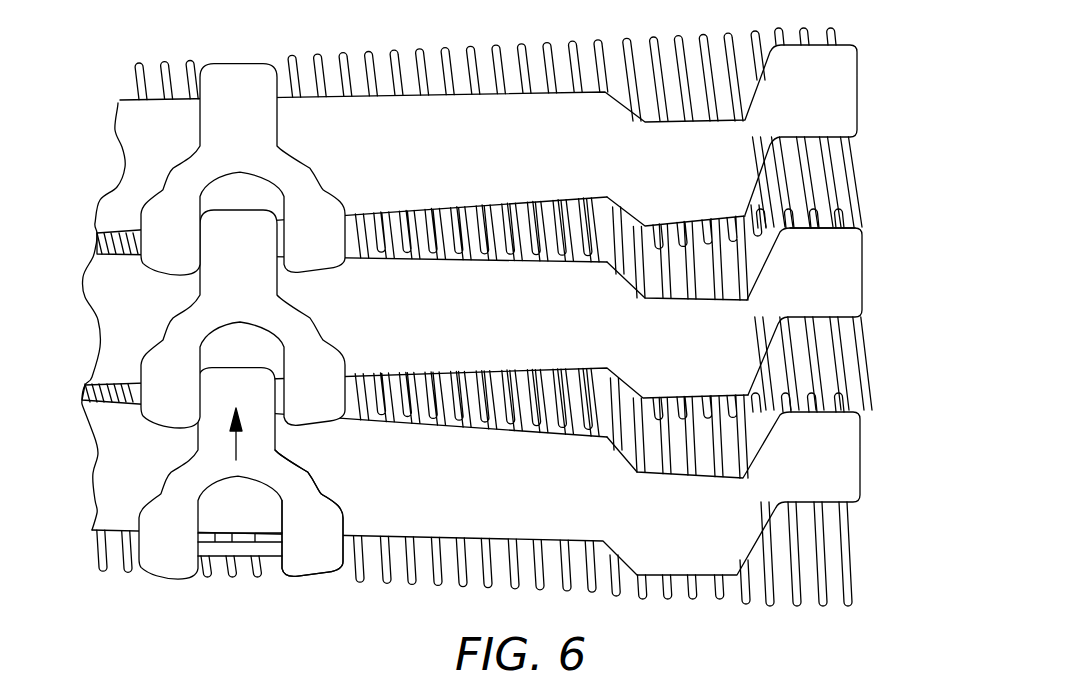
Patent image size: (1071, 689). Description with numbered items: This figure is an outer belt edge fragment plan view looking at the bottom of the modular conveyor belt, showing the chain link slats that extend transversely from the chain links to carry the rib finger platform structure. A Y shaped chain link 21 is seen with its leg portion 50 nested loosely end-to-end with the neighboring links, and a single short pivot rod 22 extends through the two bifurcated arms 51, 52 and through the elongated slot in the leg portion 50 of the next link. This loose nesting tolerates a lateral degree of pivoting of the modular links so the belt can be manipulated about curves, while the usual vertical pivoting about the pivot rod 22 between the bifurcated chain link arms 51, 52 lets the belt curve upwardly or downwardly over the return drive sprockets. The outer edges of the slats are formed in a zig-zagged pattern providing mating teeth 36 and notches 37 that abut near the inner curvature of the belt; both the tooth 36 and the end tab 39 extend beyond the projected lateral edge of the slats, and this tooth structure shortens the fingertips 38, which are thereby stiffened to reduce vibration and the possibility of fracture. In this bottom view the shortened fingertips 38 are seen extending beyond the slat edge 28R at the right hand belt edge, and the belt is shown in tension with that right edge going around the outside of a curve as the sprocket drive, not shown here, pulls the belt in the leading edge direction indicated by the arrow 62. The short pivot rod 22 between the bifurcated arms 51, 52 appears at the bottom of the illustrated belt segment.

The Y shaped chain link 21 is at (240, 77).
The pivot rod 22 is at (218, 550).
The slat edge at right hand belt edge 28R is at (586, 265).
The tooth 36 is at (723, 375).
The notch 37 is at (673, 300).
The shortened fingertip 38 is at (815, 222).
The end tab 39 is at (842, 278).
The leg portion 50 is at (222, 114).
The bifurcated arm 51 is at (157, 553).
The bifurcated arm 52 is at (307, 563).
The arrow 62 is at (237, 445).